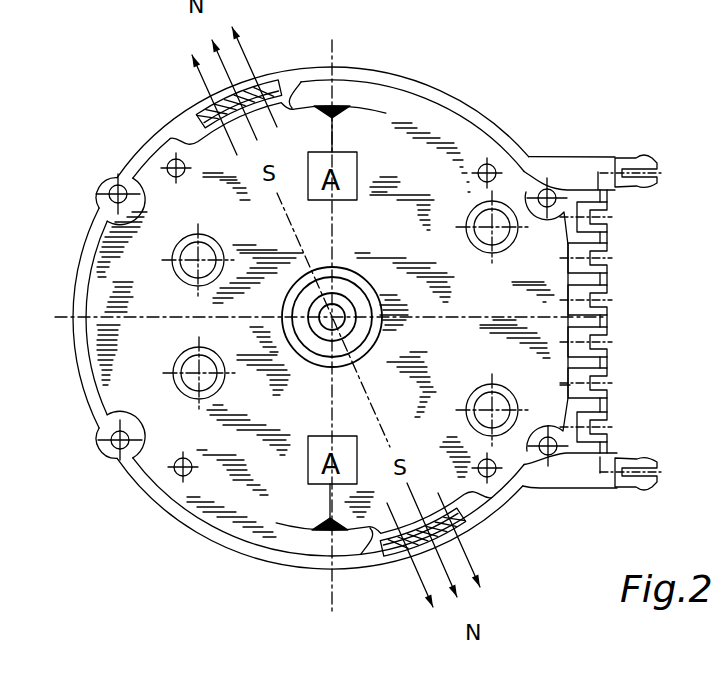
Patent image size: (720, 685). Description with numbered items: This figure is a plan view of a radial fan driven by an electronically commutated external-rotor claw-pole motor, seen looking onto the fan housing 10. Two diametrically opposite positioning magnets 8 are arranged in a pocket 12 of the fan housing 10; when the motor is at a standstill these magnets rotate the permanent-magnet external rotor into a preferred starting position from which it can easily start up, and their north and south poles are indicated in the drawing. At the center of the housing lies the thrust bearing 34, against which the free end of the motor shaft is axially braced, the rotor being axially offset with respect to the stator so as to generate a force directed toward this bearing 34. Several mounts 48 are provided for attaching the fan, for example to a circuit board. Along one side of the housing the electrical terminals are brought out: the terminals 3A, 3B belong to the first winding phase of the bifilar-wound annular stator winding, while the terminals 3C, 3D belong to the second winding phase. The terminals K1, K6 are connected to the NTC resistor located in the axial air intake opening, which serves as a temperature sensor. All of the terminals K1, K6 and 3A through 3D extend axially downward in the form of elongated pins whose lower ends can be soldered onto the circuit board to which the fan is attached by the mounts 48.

The fan housing 10 is at (413, 72).
The pocket 12 is at (293, 80).
The positioning magnets 8 is at (197, 106).
The thrust bearing 34 is at (340, 295).
The mounts 48 is at (217, 243).
The terminal K1 is at (602, 217).
The terminal K6 is at (606, 427).
The terminal 3A is at (612, 258).
The terminal 3B is at (612, 300).
The terminal 3C is at (612, 342).
The terminal 3D is at (612, 383).